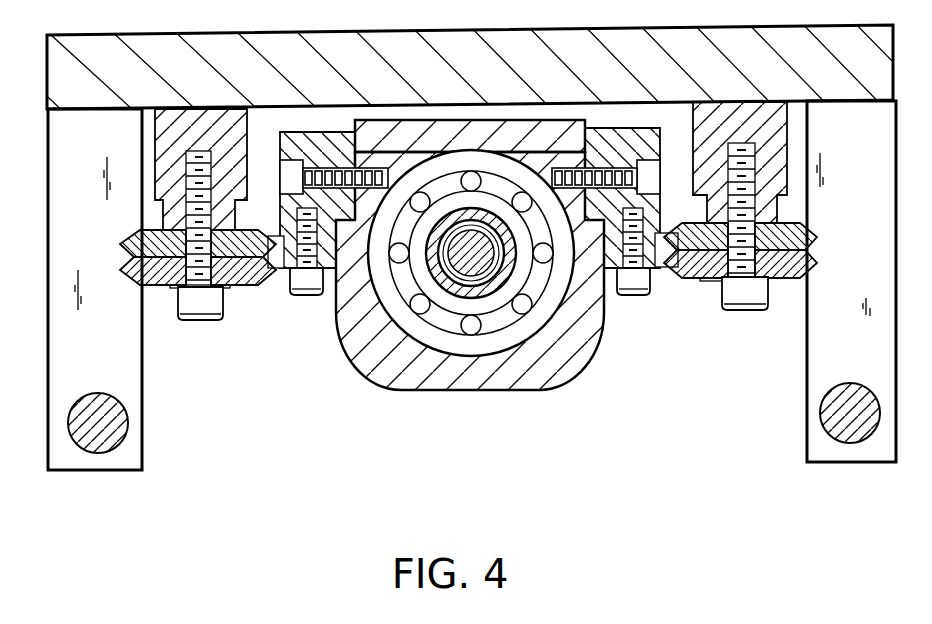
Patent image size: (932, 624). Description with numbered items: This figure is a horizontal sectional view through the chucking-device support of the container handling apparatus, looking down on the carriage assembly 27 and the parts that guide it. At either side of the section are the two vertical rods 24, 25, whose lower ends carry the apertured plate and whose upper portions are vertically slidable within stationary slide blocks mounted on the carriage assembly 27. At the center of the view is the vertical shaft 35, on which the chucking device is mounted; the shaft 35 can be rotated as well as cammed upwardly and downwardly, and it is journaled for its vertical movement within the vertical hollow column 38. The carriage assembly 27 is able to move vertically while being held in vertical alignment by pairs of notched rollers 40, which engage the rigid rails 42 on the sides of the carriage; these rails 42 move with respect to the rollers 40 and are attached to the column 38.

The vertical rod 24 is at (145, 443).
The vertical rod 25 is at (807, 442).
The carriage assembly 27 is at (358, 382).
The vertical shaft 35 is at (478, 267).
The vertical hollow column 38 is at (477, 302).
The notched rollers 40 is at (240, 287).
The rigid rails 42 is at (280, 273).